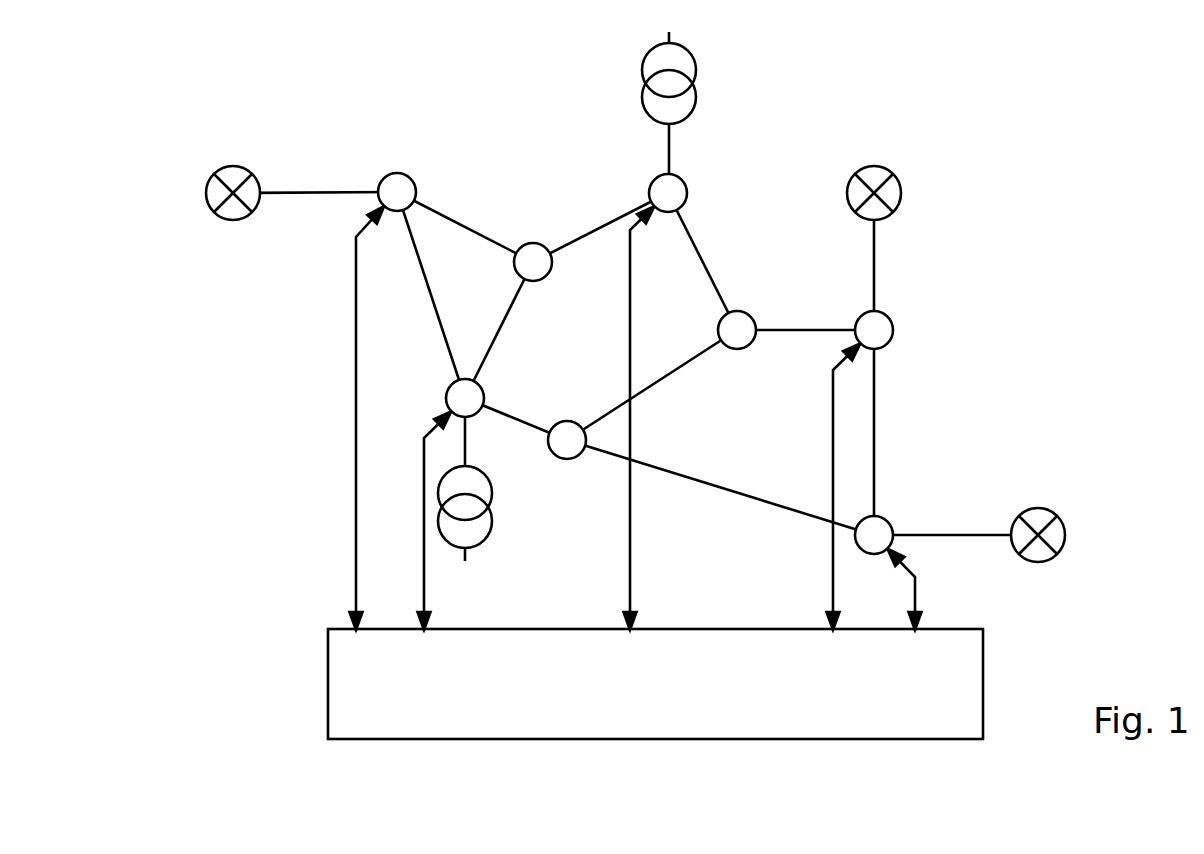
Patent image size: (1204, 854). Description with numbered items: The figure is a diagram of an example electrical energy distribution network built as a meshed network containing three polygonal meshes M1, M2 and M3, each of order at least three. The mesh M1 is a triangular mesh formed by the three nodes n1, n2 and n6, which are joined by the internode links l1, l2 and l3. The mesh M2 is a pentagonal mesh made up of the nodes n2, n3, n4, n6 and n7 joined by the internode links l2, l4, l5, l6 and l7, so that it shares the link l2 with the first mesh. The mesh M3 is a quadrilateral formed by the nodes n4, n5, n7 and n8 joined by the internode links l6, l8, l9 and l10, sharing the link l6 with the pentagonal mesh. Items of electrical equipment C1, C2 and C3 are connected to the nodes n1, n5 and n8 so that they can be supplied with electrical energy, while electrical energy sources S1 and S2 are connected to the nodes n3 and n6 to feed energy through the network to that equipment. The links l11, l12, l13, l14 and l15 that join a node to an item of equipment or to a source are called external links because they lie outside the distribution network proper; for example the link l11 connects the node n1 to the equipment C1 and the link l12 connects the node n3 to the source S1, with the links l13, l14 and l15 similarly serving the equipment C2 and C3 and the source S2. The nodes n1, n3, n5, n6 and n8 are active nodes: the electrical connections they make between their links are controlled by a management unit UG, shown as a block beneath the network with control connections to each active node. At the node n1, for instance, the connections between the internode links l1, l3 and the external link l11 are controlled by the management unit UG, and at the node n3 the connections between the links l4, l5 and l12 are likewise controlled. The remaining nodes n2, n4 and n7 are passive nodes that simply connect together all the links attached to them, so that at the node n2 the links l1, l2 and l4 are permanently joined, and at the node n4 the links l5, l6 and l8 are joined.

The management unit UG is at (655, 684).
The internode link l1 is at (465, 227).
The internode link l2 is at (499, 330).
The internode link l3 is at (431, 295).
The internode link l4 is at (600, 227).
The internode link l5 is at (702, 261).
The internode link l6 is at (652, 385).
The internode link l7 is at (516, 419).
The internode link l8 is at (805, 318).
The internode link l9 is at (885, 432).
The internode link l10 is at (720, 487).
The external link l11 is at (315, 179).
The external link l12 is at (691, 158).
The external link l13 is at (895, 261).
The external link l14 is at (956, 522).
The external link l15 is at (484, 432).
The mesh M1 is at (417, 418).
The mesh M2 is at (623, 418).
The mesh M3 is at (842, 486).
The electrical energy source S1 is at (686, 78).
The electrical energy source S2 is at (482, 513).
The item of electrical equipment C1 is at (233, 178).
The item of electrical equipment C2 is at (874, 178).
The item of electrical equipment C3 is at (1038, 520).
The active node n1 is at (397, 192).
The passive node n2 is at (533, 262).
The active node n3 is at (668, 193).
The passive node n4 is at (737, 330).
The active node n5 is at (874, 330).
The active node n6 is at (465, 398).
The passive node n7 is at (567, 440).
The active node n8 is at (874, 535).